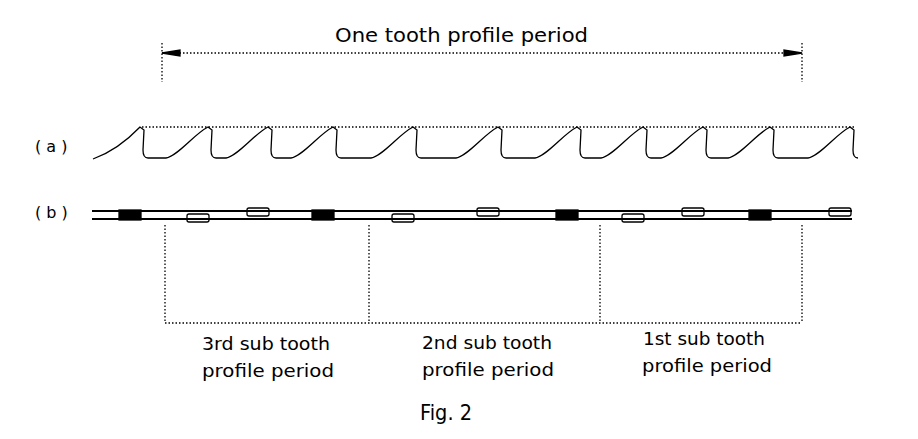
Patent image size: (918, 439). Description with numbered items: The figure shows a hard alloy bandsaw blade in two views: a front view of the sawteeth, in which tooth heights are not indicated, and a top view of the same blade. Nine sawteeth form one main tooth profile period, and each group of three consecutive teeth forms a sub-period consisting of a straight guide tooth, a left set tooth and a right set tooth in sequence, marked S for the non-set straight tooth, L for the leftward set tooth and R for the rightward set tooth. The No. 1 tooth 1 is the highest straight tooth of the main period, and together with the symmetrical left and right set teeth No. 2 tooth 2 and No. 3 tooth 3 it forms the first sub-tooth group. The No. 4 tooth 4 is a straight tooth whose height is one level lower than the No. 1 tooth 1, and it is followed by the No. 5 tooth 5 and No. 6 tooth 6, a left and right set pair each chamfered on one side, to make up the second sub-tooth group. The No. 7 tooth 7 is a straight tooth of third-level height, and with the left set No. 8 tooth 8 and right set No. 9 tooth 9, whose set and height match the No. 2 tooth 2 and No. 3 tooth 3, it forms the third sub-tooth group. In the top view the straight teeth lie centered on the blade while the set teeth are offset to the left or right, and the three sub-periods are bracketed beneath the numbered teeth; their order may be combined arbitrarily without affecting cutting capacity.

The No. 1 tooth 1 is at (435, 183).
The No. 2 tooth 2 is at (681, 183).
The No. 3 tooth 3 is at (618, 183).
The No. 4 tooth 4 is at (545, 183).
The No. 5 tooth 5 is at (463, 183).
The No. 6 tooth 6 is at (381, 183).
The No. 7 tooth 7 is at (308, 183).
The No. 8 tooth 8 is at (246, 183).
The No. 9 tooth 9 is at (503, 183).